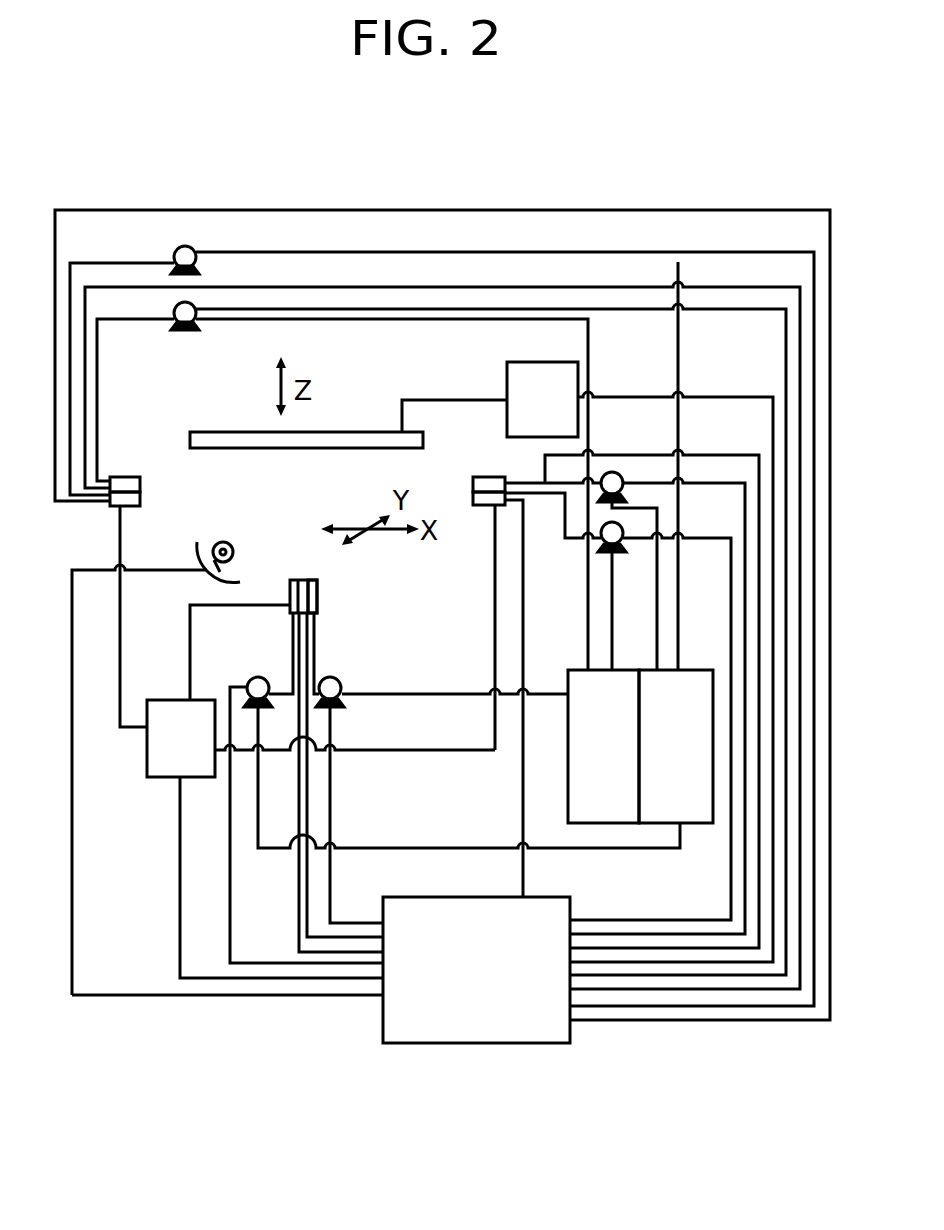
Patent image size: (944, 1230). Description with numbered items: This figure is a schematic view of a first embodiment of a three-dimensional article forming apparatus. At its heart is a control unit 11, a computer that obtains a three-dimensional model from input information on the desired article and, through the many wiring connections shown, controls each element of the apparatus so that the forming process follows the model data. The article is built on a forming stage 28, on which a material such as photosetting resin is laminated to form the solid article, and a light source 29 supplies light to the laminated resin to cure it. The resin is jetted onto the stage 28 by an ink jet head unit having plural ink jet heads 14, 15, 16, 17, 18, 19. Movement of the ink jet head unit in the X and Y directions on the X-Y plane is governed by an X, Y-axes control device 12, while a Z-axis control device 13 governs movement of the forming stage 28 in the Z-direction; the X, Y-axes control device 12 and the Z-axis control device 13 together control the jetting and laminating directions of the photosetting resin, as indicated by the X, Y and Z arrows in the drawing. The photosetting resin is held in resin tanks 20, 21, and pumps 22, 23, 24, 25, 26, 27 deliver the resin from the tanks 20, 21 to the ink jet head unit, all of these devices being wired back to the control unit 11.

The control unit 11 is at (425, 908).
The X, Y-axes control device 12 is at (174, 700).
The Z-axis control device 13 is at (525, 370).
The ink jet head 14 is at (140, 480).
The ink jet head 15 is at (140, 500).
The ink jet head 16 is at (290, 597).
The ink jet head 17 is at (318, 581).
The ink jet head 18 is at (480, 505).
The ink jet head 19 is at (493, 477).
The resin tank 20 is at (583, 670).
The resin tank 21 is at (690, 670).
The pump 22 is at (186, 331).
The pump 23 is at (176, 250).
The pump 24 is at (266, 652).
The pump 25 is at (352, 652).
The pump 26 is at (620, 552).
The pump 27 is at (623, 480).
The forming stage 28 is at (381, 448).
The light source 29 is at (236, 546).